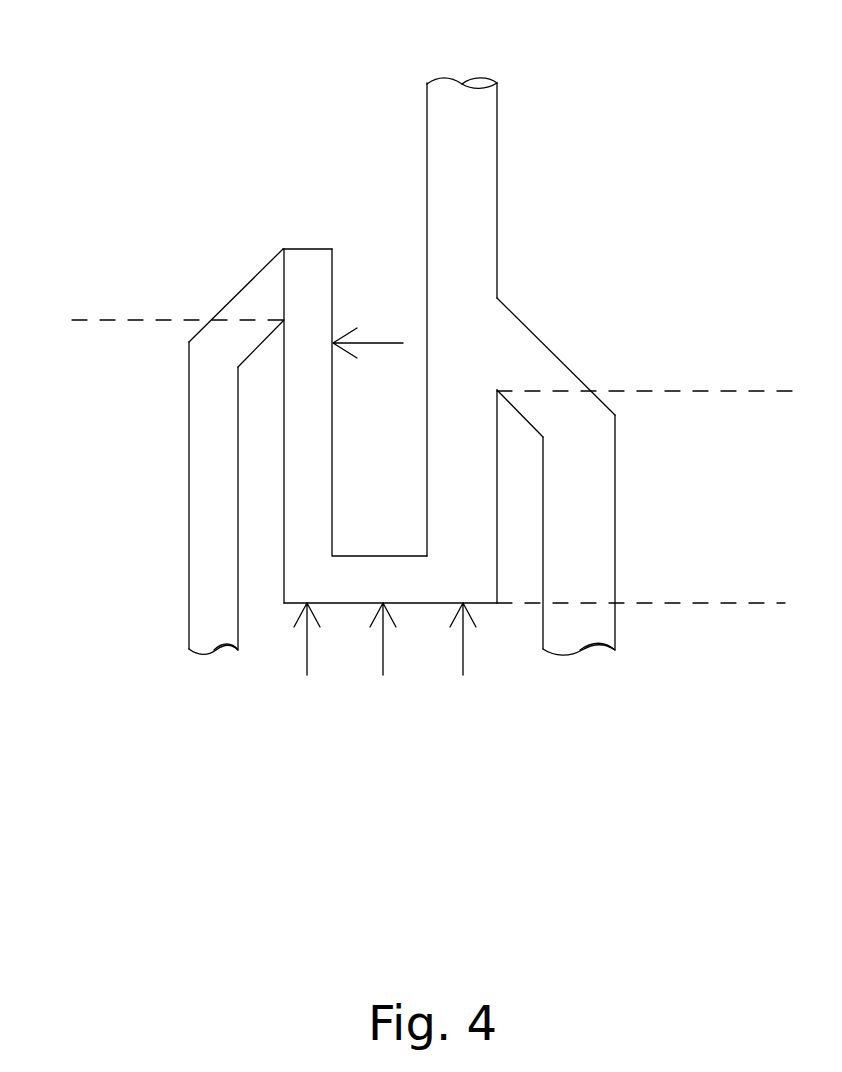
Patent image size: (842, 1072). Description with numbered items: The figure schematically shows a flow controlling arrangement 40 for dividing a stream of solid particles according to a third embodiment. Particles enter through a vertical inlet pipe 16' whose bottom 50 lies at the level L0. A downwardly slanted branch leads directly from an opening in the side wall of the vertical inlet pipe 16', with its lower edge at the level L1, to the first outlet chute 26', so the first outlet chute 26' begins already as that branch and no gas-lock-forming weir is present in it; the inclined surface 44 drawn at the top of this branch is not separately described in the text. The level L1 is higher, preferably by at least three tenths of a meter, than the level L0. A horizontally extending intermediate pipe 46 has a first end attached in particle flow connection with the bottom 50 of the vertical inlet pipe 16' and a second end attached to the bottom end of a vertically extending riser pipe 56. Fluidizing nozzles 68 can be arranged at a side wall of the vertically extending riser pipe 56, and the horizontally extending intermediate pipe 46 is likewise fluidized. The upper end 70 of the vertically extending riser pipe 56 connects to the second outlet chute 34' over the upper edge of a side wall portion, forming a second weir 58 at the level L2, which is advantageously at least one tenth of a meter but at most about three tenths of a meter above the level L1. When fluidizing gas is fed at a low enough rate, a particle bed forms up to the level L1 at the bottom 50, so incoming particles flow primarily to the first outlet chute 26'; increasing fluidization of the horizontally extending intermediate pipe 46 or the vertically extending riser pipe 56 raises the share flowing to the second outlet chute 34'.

The flow controlling arrangement 40 is at (248, 103).
The vertical inlet pipe 16' is at (547, 317).
The fluidizing nozzles 68 is at (379, 381).
The upper end 70 is at (332, 293).
The second weir 58 is at (283, 320).
The vertically extending riser pipe 56 is at (285, 466).
The second outlet chute 34' is at (126, 498).
The first outlet chute 26' is at (674, 535).
The inclined surface 44 is at (498, 388).
The bottom 50 is at (483, 603).
The horizontally extending intermediate pipe 46 is at (365, 603).
The level of the bottom of the vertical inlet pipe L0 is at (644, 578).
The level of the lower edge of the branch opening L1 is at (646, 366).
The level of the second weir L2 is at (177, 295).